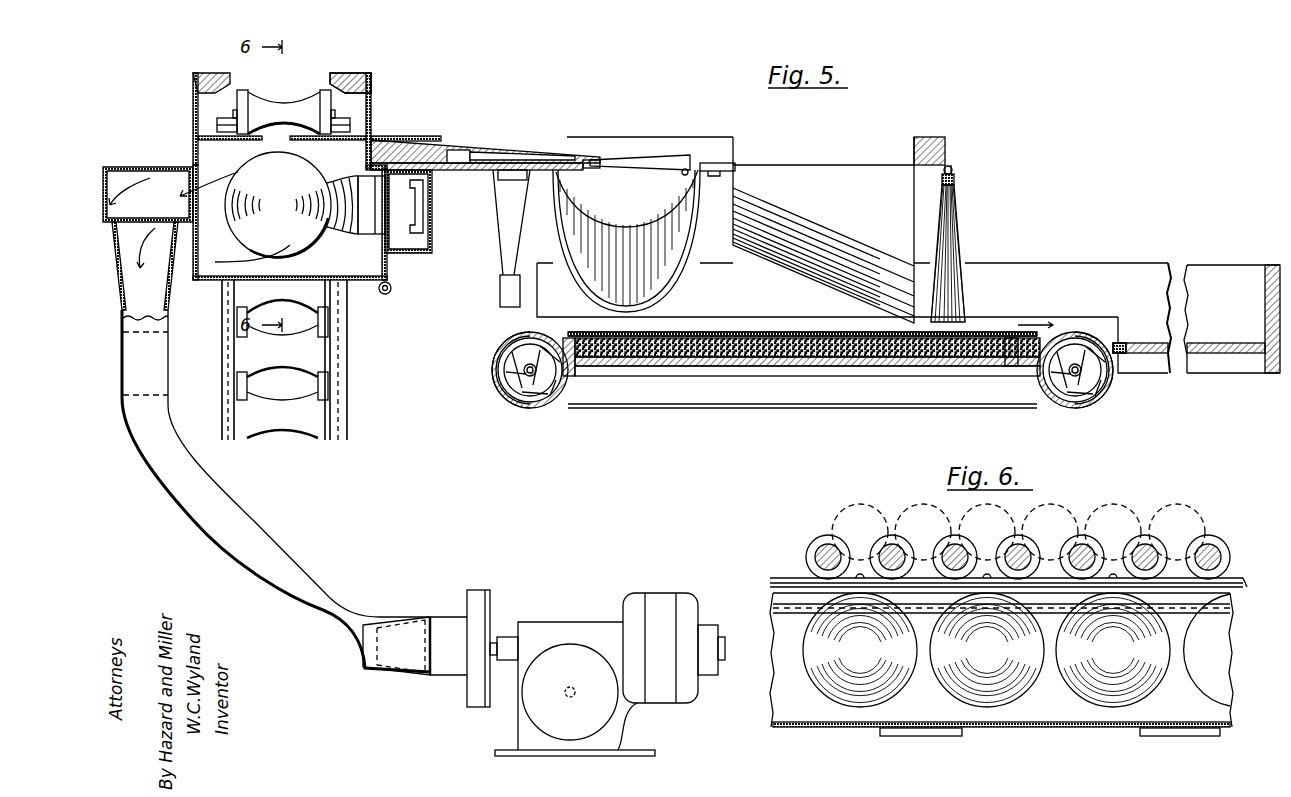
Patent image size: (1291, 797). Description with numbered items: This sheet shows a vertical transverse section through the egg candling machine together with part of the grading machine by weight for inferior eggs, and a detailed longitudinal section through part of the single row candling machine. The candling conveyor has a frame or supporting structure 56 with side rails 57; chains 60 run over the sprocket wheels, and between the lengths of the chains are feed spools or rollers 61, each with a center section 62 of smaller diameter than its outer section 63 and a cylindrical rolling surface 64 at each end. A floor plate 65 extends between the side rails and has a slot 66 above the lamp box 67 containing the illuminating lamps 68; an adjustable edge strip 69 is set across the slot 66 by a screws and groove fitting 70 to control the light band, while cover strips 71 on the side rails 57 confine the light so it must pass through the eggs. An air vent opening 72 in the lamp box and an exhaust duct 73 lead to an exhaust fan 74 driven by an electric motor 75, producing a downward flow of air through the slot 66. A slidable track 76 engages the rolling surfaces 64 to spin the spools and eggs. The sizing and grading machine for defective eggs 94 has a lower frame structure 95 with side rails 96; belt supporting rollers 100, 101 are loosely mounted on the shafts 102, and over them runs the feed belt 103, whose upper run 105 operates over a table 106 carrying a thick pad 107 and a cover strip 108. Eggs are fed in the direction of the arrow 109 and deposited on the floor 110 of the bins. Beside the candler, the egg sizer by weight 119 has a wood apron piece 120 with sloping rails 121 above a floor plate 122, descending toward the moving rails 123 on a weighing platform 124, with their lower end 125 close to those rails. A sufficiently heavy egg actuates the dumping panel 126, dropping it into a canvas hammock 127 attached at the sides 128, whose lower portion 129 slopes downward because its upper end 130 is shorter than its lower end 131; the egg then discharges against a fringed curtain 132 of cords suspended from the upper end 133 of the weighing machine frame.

In FIG. 5, the frame or supporting structure 56 is at (189, 127).
In FIG. 5, the side rails 57 is at (193, 103).
In FIG. 5, the chains 60 is at (342, 117).
In FIG. 5, the feed spools or rollers 61 is at (304, 94).
In FIG. 6, the feed spools or rollers 61 is at (1236, 540).
In FIG. 5, the center section 62 is at (275, 103).
In FIG. 6, the center section 62 is at (1024, 549).
In FIG. 5, the outer section 63 is at (318, 105).
In FIG. 6, the outer section 63 is at (1152, 550).
In FIG. 5, the cylindrical rolling surface 64 is at (243, 102).
In FIG. 6, the cylindrical rolling surface 64 is at (1089, 550).
In FIG. 5, the floor plate 65 is at (386, 138).
In FIG. 5, the slot 66 is at (273, 140).
In FIG. 5, the lamp box 67 is at (222, 282).
In FIG. 6, the lamp box 67 is at (827, 713).
In FIG. 5, the illuminating lamps 68 is at (318, 252).
In FIG. 6, the illuminating lamps 68 is at (1093, 683).
In FIG. 6, the adjustable edge strip 69 is at (1233, 581).
In FIG. 6, the screws and groove fitting 70 is at (859, 577).
In FIG. 5, the cover strips 71 is at (348, 90).
In FIG. 5, the air vent opening 72 is at (197, 203).
In FIG. 5, the exhaust duct 73 is at (167, 458).
In FIG. 5, the exhaust fan 74 is at (480, 605).
In FIG. 5, the electric motor 75 is at (573, 628).
In FIG. 5, the slidable track 76 is at (367, 211).
In FIG. 5, the sizing and grading machine for defective eggs 94 is at (940, 134).
In FIG. 5, the lower frame structure 95 is at (1160, 255).
In FIG. 5, the side rails 96 is at (987, 272).
In FIG. 5, the belt supporting roller 100 is at (1100, 393).
In FIG. 5, the belt supporting roller 101 is at (525, 392).
In FIG. 5, the shafts 102 is at (497, 392).
In FIG. 5, the feed belt 103 is at (823, 424).
In FIG. 5, the upper run 105 is at (805, 332).
In FIG. 5, the table 106 is at (740, 360).
In FIG. 5, the thick pad 107 is at (682, 353).
In FIG. 5, the cover strip 108 is at (883, 337).
In FIG. 5, the arrow 109 is at (1040, 320).
In FIG. 5, the floor 110 is at (1223, 346).
In FIG. 5, the egg sizer by weight 119 is at (516, 104).
In FIG. 5, the wood apron piece 120 is at (435, 145).
In FIG. 5, the sloping rails 121 is at (468, 152).
In FIG. 5, the floor plate 122 is at (472, 172).
In FIG. 5, the moving rails 123 is at (538, 160).
In FIG. 5, the weighing platform 124 is at (532, 165).
In FIG. 5, the lower end 125 is at (500, 154).
In FIG. 5, the dumping panel 126 is at (655, 160).
In FIG. 5, the hammock 127 is at (682, 295).
In FIG. 5, the sides 128 is at (707, 165).
In FIG. 5, the lower portion 129 is at (648, 293).
In FIG. 5, the upper end 130 is at (733, 190).
In FIG. 5, the lower end 131 is at (913, 223).
In FIG. 5, the fringed curtain 132 is at (950, 298).
In FIG. 5, the upper end 133 is at (953, 181).